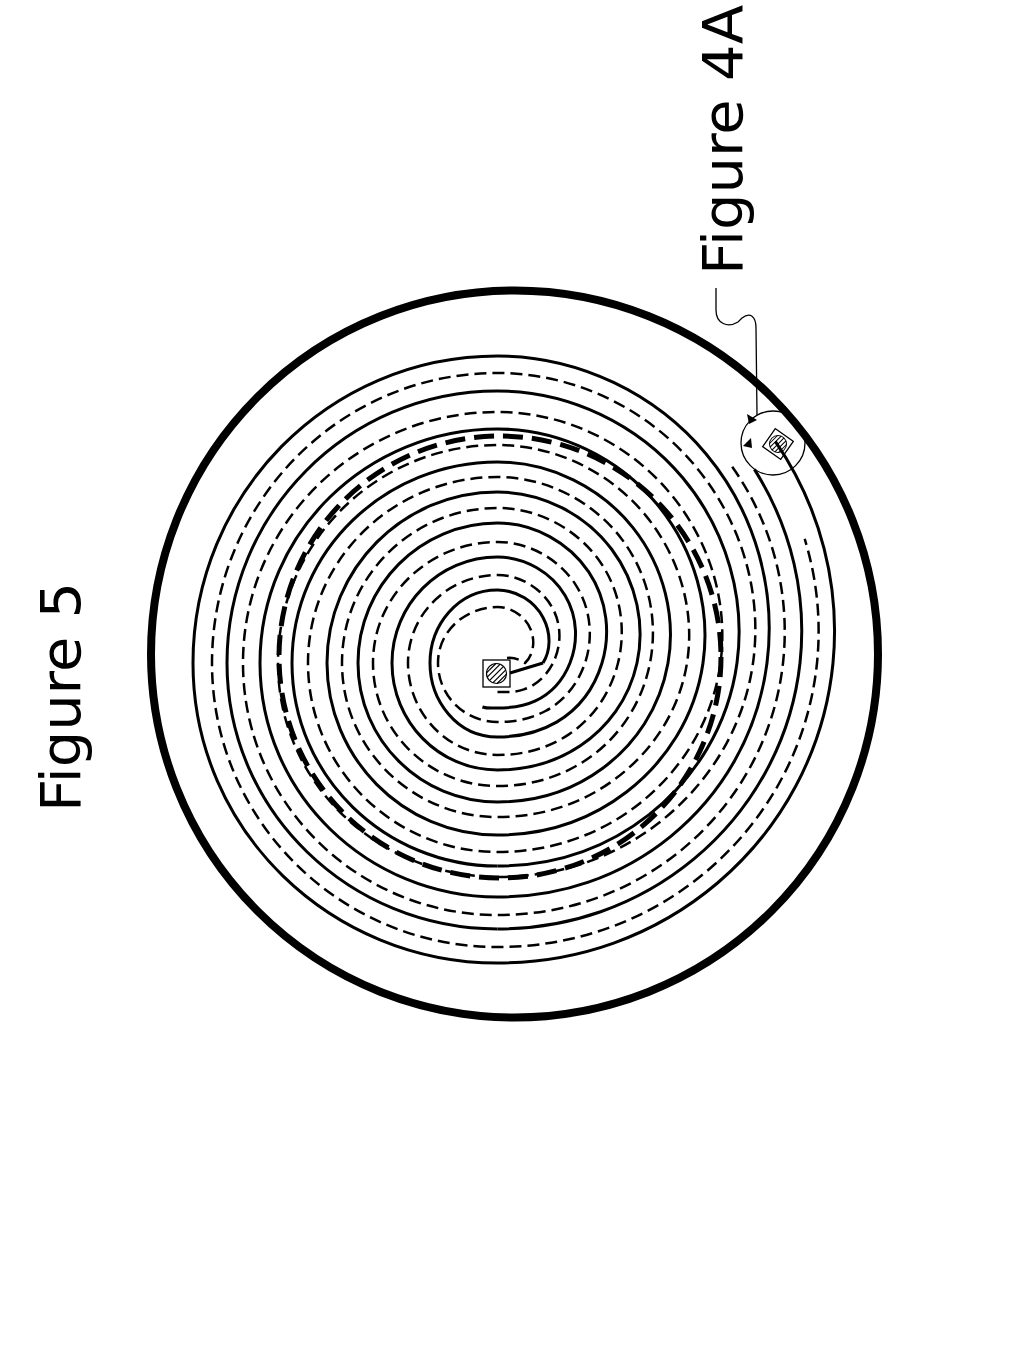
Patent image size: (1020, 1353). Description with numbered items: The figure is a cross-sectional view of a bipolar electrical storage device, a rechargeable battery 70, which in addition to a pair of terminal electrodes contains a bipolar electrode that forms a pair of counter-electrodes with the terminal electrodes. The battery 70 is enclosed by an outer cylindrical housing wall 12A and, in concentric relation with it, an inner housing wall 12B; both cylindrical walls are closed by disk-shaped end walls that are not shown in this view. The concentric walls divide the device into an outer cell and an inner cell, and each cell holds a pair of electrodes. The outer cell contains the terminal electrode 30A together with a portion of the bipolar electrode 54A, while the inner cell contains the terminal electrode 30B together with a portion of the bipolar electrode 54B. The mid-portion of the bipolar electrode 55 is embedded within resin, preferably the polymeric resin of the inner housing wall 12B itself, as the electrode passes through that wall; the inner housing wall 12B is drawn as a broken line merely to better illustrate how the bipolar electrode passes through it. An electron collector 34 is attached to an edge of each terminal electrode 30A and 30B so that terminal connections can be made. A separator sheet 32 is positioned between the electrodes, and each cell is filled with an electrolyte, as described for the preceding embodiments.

The battery 70 is at (180, 402).
The outer cylindrical housing wall 12A is at (252, 398).
The inner housing wall 12B is at (663, 500).
The terminal electrode 30A is at (330, 400).
The terminal electrode 30B is at (415, 398).
The separator sheet 32 is at (500, 373).
The electron collector 34 is at (500, 687).
The bipolar electrode portion 54A is at (733, 627).
The bipolar electrode portion 54B is at (412, 850).
The mid-portion of the bipolar electrode 55 is at (589, 450).